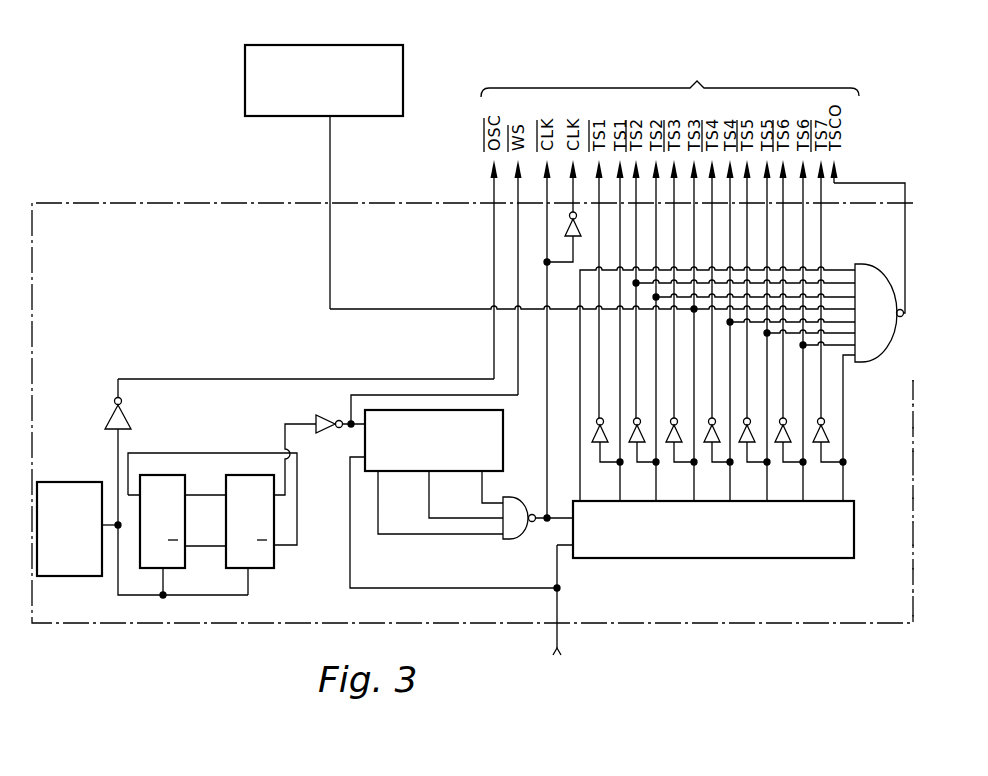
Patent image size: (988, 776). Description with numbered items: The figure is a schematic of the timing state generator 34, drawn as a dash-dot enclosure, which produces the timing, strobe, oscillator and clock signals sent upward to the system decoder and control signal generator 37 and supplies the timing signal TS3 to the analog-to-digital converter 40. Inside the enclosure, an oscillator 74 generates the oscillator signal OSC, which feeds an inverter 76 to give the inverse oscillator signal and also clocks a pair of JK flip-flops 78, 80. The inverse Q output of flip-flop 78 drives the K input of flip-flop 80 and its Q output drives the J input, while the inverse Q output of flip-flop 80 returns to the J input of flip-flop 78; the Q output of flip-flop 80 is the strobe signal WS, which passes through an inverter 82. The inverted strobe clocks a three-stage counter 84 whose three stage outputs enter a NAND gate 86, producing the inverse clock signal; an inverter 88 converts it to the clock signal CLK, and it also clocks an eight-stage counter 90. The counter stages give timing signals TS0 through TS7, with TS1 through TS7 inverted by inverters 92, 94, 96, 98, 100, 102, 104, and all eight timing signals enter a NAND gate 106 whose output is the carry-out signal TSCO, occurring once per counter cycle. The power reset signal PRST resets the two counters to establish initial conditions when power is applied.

The timing state generator 34 is at (145, 623).
The system decoder and control signal generator 37 is at (673, 71).
The analog-to-digital converter 40 is at (298, 111).
The oscillator 74 is at (63, 486).
The inverter 76 is at (125, 419).
The JK flip-flop 78 is at (177, 569).
The JK flip-flop 80 is at (266, 570).
The inverter 82 is at (317, 420).
The three-stage counter 84 is at (412, 468).
The NAND gate 86 is at (517, 528).
The inverter 88 is at (571, 228).
The eight-stage counter 90 is at (773, 543).
The inverter 92 is at (597, 444).
The inverter 94 is at (634, 444).
The inverter 96 is at (671, 444).
The inverter 98 is at (709, 444).
The inverter 100 is at (744, 444).
The inverter 102 is at (780, 444).
The inverter 104 is at (818, 444).
The NAND gate 106 is at (863, 270).